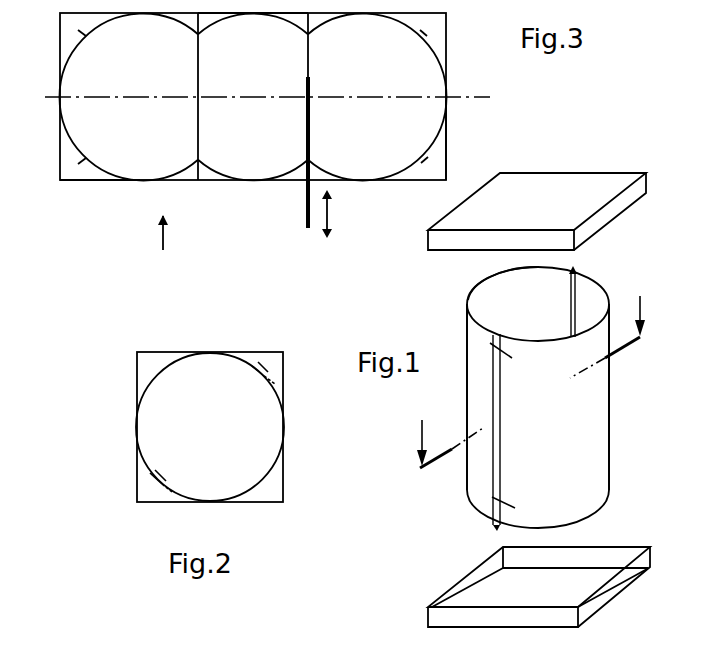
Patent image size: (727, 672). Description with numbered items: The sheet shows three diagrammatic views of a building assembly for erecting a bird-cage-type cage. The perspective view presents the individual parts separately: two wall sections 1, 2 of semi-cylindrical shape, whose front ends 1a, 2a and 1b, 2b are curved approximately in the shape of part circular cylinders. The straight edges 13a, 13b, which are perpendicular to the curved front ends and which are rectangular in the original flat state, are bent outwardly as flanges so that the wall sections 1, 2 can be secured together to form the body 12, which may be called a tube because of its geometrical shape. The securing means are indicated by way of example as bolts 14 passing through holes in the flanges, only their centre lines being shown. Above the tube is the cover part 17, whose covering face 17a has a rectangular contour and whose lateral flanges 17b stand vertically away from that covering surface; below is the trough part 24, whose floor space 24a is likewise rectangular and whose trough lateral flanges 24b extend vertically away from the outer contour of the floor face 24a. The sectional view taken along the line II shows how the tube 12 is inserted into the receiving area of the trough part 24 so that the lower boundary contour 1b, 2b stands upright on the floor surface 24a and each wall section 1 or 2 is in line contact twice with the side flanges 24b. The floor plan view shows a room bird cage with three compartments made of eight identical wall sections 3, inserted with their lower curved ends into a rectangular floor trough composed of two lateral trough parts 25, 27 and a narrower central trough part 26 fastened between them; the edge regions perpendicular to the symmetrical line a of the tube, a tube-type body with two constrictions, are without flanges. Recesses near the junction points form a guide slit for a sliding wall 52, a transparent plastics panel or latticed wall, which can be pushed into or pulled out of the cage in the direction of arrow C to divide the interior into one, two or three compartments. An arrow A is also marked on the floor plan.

In FIG. 2, the wall section 1 is at (177, 362).
In FIG. 1, the wall section 1 is at (493, 301).
In FIG. 1, the front end of wall section 1 1a is at (482, 283).
In FIG. 1, the lower front end of wall section 1 1b is at (478, 508).
In FIG. 2, the wall section 2 is at (273, 465).
In FIG. 1, the wall section 2 is at (590, 308).
In FIG. 1, the front end of wall section 2 2a is at (585, 279).
In FIG. 1, the lower front end of wall section 2 2b is at (600, 507).
In FIG. 3, the wall section 3 is at (108, 22).
In FIG. 1, the body 12 is at (617, 435).
In FIG. 1, the straight edge 13a is at (506, 444).
In FIG. 1, the straight edge 13b is at (523, 297).
In FIG. 2, the bolt 14 is at (253, 364).
In FIG. 1, the bolt 14 is at (492, 497).
In FIG. 1, the cover part 17 is at (578, 172).
In FIG. 1, the covering face 17a is at (535, 188).
In FIG. 1, the lateral flange 17b is at (592, 227).
In FIG. 2, the trough part 24 is at (148, 372).
In FIG. 1, the trough part 24 is at (604, 607).
In FIG. 1, the floor space 24a is at (485, 598).
In FIG. 1, the lateral flange 24b is at (490, 573).
In FIG. 3, the trough part 25 is at (75, 173).
In FIG. 3, the trough part 26 is at (297, 19).
In FIG. 3, the trough part 27 is at (436, 162).
In FIG. 3, the sliding wall 52 is at (306, 211).
In FIG. 3, the symmetrical line a is at (471, 97).
In FIG. 3, the direction A is at (174, 234).
In FIG. 3, the arrow C is at (335, 214).
In FIG. 1, the section line II— II is at (531, 386).